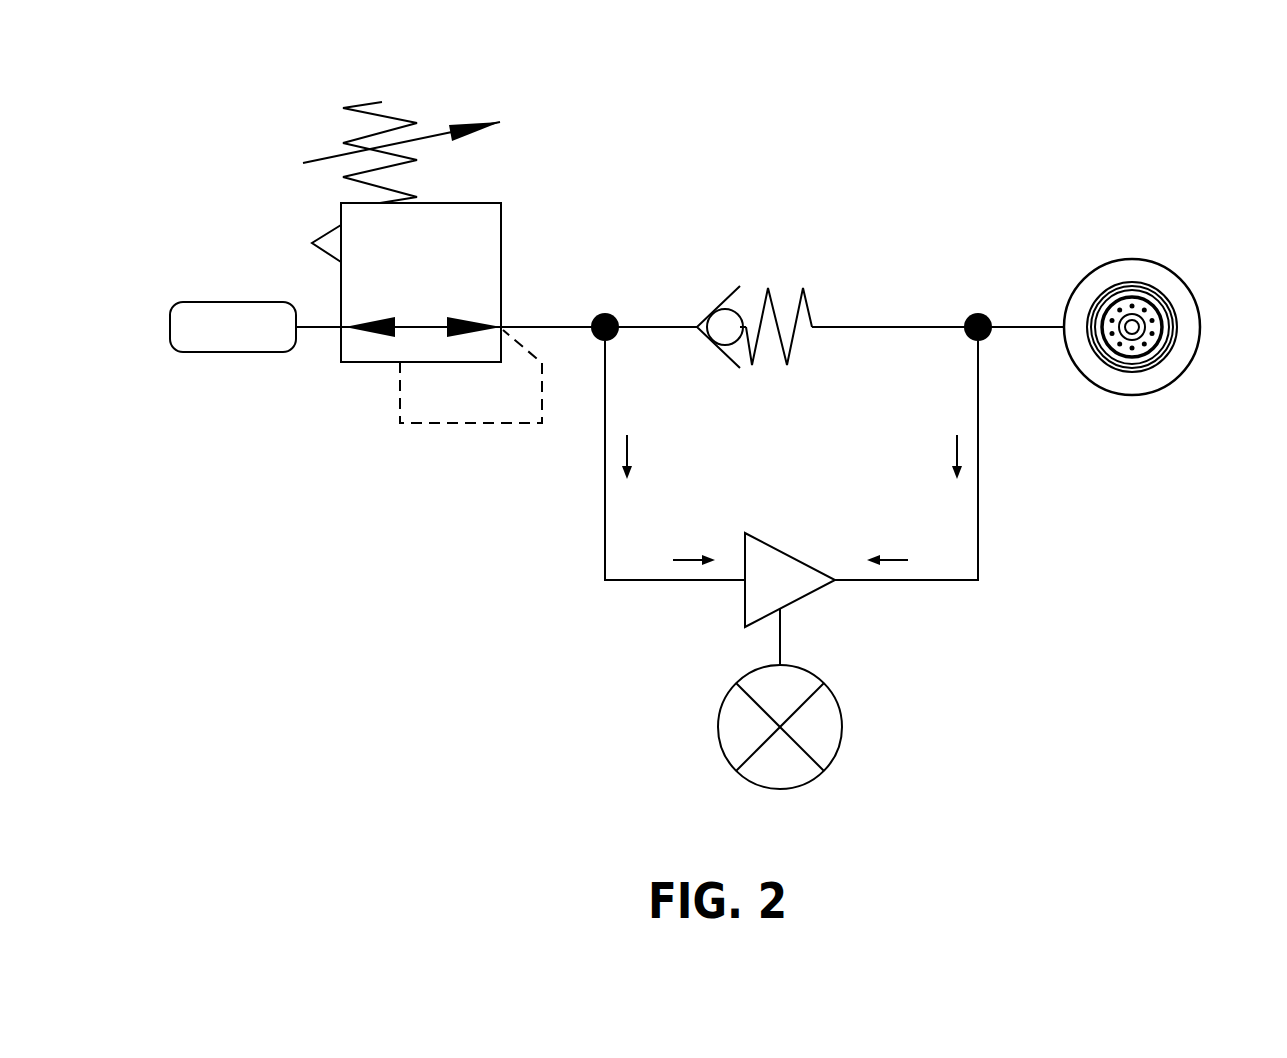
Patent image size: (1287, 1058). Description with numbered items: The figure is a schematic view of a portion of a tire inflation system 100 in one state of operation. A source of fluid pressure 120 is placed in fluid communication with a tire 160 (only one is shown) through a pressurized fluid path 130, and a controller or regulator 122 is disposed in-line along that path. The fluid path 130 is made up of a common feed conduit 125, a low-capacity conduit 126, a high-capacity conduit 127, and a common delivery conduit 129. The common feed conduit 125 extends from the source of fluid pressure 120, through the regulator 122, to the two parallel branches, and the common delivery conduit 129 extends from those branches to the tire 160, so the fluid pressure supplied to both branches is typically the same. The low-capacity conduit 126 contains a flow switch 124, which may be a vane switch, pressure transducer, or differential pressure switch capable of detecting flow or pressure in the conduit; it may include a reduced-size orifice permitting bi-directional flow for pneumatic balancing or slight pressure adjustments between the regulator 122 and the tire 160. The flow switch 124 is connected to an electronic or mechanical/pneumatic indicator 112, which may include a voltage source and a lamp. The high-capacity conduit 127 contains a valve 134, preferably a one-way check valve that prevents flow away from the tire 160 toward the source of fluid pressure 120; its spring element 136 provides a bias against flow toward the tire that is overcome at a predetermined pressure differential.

The tire inflation system 100 is at (838, 118).
The indicator 112 is at (843, 717).
The source of fluid pressure 120 is at (212, 302).
The regulator 122 is at (483, 203).
The flow switch 124 is at (803, 598).
The common feed conduit 125 is at (540, 327).
The low-capacity conduit 126 is at (658, 580).
The high-capacity conduit 127 is at (870, 327).
The common delivery conduit 129 is at (1010, 327).
The pressurized fluid path 130 is at (763, 276).
The valve 134 is at (740, 286).
The spring element 136 is at (803, 288).
The tire 160 is at (1183, 277).